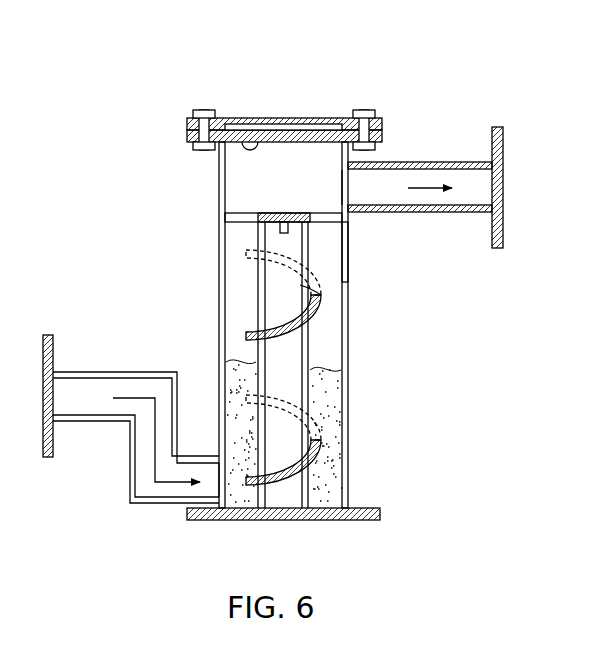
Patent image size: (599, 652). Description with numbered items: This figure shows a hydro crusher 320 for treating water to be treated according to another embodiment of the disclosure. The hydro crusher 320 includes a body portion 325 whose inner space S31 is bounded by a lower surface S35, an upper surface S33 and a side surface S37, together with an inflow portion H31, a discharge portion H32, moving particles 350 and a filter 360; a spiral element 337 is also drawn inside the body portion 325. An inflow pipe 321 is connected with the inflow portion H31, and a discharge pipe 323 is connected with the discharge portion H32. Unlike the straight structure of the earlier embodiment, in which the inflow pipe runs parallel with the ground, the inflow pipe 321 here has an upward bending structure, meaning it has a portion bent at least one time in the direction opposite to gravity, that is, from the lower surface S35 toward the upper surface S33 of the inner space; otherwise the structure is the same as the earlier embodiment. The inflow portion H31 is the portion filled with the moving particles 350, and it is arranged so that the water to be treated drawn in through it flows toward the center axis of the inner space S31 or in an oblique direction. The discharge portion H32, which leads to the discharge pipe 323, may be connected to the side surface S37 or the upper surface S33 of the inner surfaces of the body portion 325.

The hydro crusher 320 is at (296, 55).
The inflow pipe 321 is at (100, 372).
The discharge pipe 323 is at (430, 163).
The body portion 325 is at (348, 288).
The spiral blade 337 is at (310, 343).
The moving particles 350 is at (348, 438).
The filter 360 is at (268, 214).
The inflow portion H31 is at (218, 481).
The discharge portion H32 is at (347, 182).
The inner space S31 is at (318, 325).
The upper surface S33 is at (247, 118).
The lower surface S35 is at (334, 505).
The side surface S37 is at (348, 242).